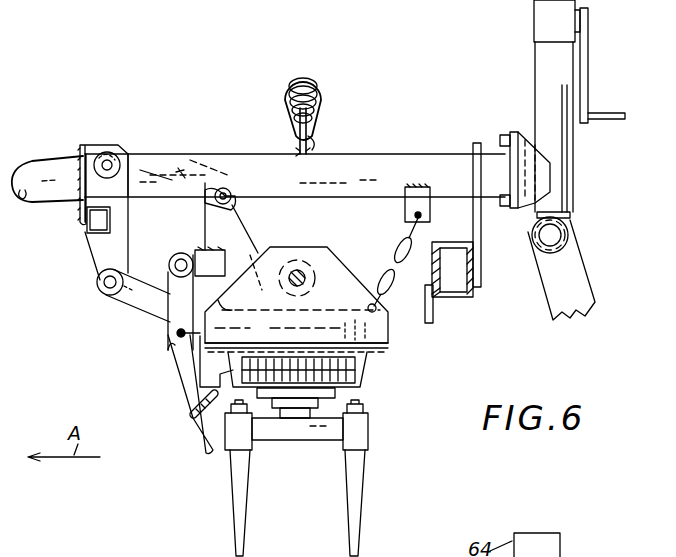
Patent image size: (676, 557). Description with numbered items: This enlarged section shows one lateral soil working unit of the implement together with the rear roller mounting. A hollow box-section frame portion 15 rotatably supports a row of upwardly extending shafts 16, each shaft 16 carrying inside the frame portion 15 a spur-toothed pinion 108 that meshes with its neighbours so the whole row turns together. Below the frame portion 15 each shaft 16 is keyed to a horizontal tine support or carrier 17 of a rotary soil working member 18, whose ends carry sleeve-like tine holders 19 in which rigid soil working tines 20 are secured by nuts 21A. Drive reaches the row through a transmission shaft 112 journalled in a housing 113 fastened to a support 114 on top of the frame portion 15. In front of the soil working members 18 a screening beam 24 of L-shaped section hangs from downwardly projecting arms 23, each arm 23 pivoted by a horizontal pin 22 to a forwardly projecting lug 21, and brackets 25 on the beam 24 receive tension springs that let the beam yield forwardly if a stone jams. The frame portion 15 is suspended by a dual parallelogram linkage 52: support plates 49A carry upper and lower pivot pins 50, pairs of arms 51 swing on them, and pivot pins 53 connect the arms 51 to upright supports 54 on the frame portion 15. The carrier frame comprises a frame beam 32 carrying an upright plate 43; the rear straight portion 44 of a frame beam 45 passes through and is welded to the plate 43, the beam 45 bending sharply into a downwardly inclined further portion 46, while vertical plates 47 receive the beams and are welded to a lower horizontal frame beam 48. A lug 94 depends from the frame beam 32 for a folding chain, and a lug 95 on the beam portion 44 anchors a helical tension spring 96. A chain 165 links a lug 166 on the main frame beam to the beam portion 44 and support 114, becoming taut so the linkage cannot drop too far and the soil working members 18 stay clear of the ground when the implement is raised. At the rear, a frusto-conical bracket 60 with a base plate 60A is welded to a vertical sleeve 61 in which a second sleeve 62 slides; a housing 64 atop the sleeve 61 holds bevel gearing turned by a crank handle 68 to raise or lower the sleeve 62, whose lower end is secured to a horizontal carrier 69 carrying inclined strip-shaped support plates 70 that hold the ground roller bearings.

The hollow frame portion 15 is at (360, 393).
The shaft 16 is at (295, 424).
The tine support or carrier 17 is at (318, 438).
The rotary soil working member 18 is at (224, 501).
The tine holder 19 is at (230, 449).
The soil working tine 20 is at (352, 519).
The lug 21 is at (214, 262).
The nut 21A is at (366, 412).
The pivot pin 22 is at (192, 256).
The arm 23 is at (172, 272).
The screening beam 24 is at (194, 417).
The bracket 25 is at (170, 350).
The frame beam 32 is at (470, 300).
The upright plate 43 is at (473, 148).
The frame beam portion 44 is at (391, 152).
The frame beam 45 is at (60, 149).
The further straight portion 46 is at (32, 156).
The vertical plate 47 is at (97, 140).
The frame beam 48 is at (88, 234).
The support plate 49A is at (97, 255).
The pivot pin 50 is at (139, 134).
The arm 51 is at (164, 152).
The dual parallelogram linkage 52 is at (193, 140).
The pivot pin 53 is at (226, 153).
The upright support 54 is at (238, 206).
The frusto-conical bracket 60 is at (543, 173).
The base plate 60A is at (510, 130).
The sleeve 61 is at (540, 62).
The second sleeve 62 is at (562, 217).
The housing 64 is at (540, 20).
The crank handle 68 is at (585, 90).
The carrier 69 is at (568, 231).
The support plate 70 is at (575, 288).
The lug 94 is at (430, 325).
The lug 95 is at (312, 150).
The helical tension spring 96 is at (286, 96).
The pinion 108 is at (348, 374).
The transmission shaft 112 is at (310, 281).
The housing 113 is at (308, 256).
The support 114 is at (320, 256).
The chain 165 is at (397, 253).
The lug 166 is at (410, 182).